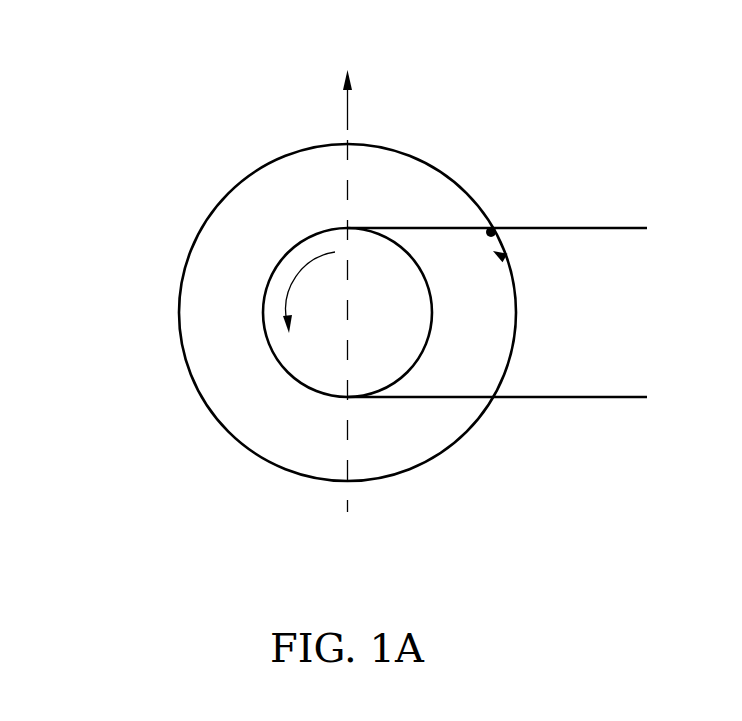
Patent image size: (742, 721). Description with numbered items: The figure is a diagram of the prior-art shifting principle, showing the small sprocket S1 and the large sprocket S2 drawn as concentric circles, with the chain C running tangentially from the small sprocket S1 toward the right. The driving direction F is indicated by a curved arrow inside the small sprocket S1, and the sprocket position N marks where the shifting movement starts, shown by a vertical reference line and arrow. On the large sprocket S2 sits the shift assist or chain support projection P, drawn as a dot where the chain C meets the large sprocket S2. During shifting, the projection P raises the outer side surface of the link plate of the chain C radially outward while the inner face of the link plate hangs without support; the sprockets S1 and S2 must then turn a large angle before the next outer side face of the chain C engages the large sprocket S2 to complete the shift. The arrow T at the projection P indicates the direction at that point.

The small sprocket S1 is at (290, 248).
The large sprocket S2 is at (181, 345).
The chain C is at (592, 228).
The shift assist projection P is at (494, 228).
The tangential direction T is at (505, 258).
The driving direction F is at (309, 308).
The sprocket position when shifting starts N is at (347, 274).